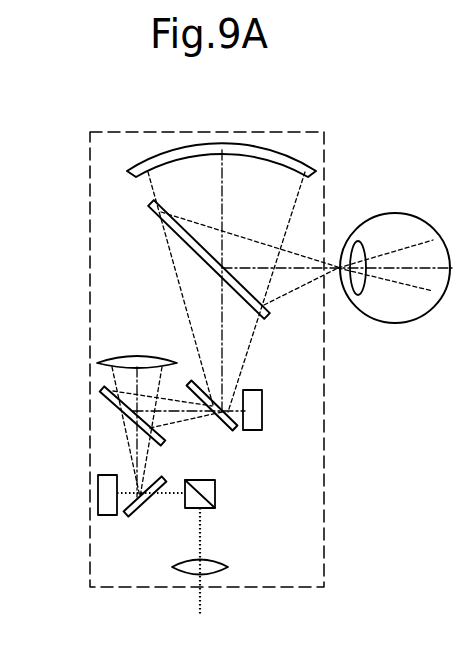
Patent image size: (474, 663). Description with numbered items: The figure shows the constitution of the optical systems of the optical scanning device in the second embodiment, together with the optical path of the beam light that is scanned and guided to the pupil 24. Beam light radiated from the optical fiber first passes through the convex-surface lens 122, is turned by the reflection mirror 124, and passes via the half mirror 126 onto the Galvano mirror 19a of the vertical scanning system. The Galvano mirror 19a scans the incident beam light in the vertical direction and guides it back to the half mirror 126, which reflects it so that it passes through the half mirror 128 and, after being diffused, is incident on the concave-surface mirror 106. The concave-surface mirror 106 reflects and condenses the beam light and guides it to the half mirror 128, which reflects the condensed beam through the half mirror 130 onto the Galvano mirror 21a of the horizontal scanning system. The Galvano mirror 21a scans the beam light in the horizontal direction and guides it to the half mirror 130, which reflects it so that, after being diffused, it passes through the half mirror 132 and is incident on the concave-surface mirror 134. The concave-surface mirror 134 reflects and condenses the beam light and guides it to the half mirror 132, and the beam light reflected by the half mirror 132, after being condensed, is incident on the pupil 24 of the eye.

The concave-surface mirror 134 is at (157, 159).
The half mirror 132 is at (150, 206).
The concave-surface mirror 106 is at (130, 355).
The half mirror 130 is at (188, 382).
The half mirror 128 is at (102, 392).
The half mirror 126 is at (164, 479).
The reflection mirror 124 is at (185, 507).
The Galvano mirror 19a is at (107, 515).
The convex-surface lens 122 is at (178, 573).
The Galvano mirror 21a is at (258, 430).
The pupil 24 is at (359, 242).